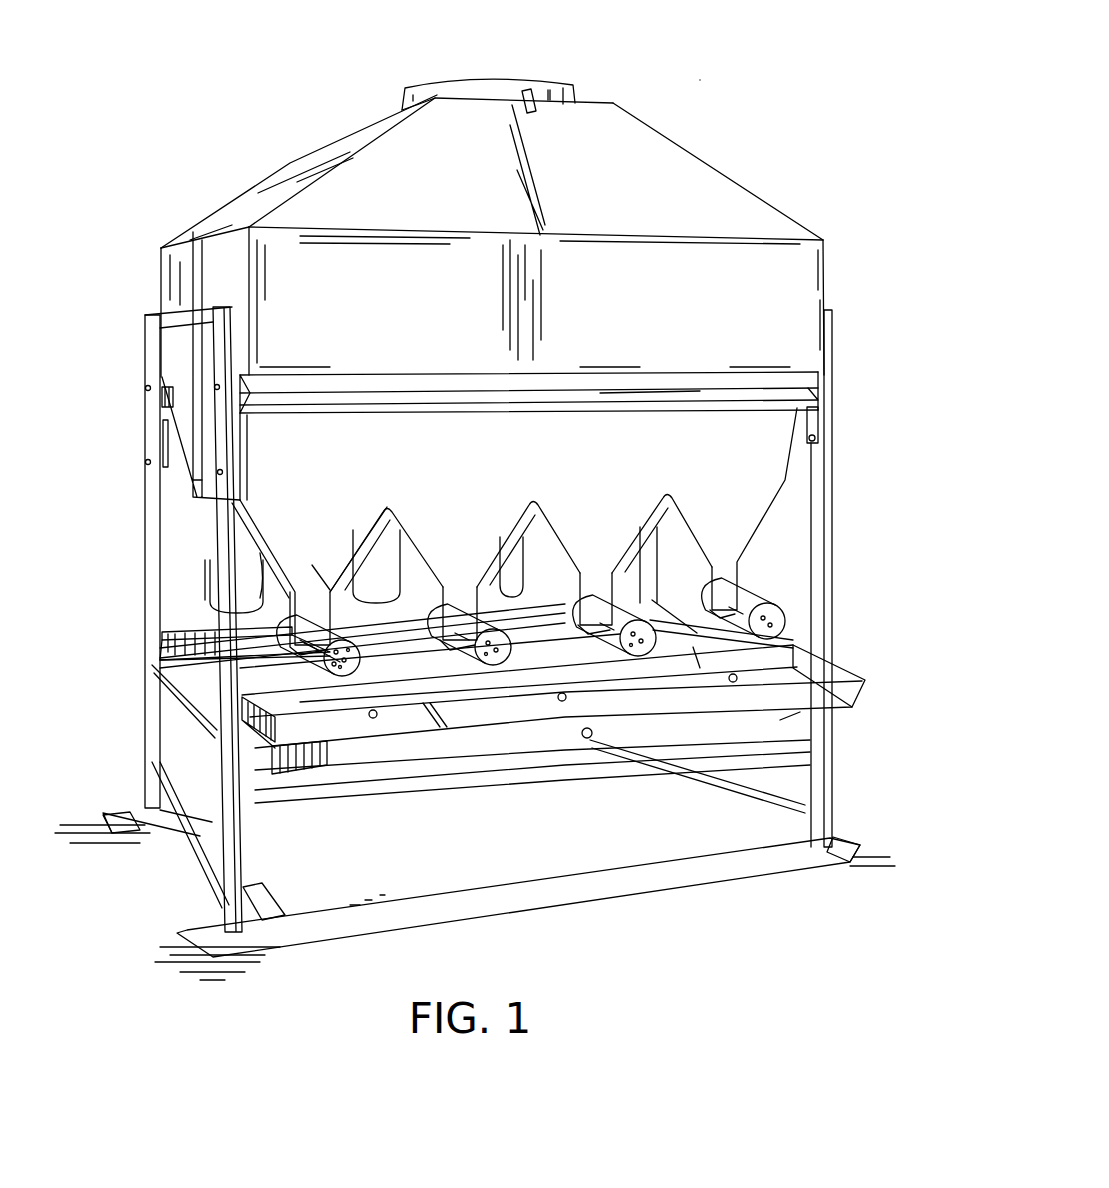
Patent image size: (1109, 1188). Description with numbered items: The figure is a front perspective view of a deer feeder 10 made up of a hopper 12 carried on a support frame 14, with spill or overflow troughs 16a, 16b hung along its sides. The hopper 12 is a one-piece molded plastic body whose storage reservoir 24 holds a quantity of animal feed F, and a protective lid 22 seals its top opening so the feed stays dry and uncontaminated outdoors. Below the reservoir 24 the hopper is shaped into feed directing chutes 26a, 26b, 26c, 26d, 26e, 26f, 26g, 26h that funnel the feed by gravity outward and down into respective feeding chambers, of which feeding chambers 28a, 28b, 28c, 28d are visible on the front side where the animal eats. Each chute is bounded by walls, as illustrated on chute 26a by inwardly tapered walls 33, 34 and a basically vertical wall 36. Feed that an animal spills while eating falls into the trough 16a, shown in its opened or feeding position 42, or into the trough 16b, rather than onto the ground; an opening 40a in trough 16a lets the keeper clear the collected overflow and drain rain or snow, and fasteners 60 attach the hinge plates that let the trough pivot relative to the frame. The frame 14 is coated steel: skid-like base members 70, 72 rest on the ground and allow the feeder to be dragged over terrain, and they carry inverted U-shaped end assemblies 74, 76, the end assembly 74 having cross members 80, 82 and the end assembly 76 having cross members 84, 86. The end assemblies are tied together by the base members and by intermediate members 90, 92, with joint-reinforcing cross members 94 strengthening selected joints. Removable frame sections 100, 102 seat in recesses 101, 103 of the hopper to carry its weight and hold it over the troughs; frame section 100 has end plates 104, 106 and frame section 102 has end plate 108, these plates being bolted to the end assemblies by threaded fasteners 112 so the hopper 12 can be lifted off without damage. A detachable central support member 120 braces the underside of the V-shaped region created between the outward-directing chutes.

The deer feeder 10 is at (727, 70).
The hopper 12 is at (529, 229).
The support frame 14 is at (481, 661).
The spill trough 16a is at (578, 736).
The spill trough 16b is at (177, 637).
The protective lid 22 is at (495, 88).
The storage reservoir 24 is at (802, 270).
The feed directing chute 26a is at (296, 539).
The feed directing chute 26b is at (462, 528).
The feed directing chute 26c is at (603, 517).
The feed directing chute 26d is at (742, 505).
The feed directing chute 26e is at (247, 543).
The feed directing chute 26f is at (380, 543).
The feed directing chute 26g is at (517, 545).
The feed directing chute 26h is at (648, 533).
The feeding chamber 28a is at (307, 667).
The feeding chamber 28b is at (463, 633).
The feeding chamber 28c is at (597, 620).
The feeding chamber 28d is at (733, 600).
The chute wall 33 is at (262, 553).
The chute wall 34 is at (350, 558).
The chute wall 36 is at (312, 565).
The opening 40a is at (590, 738).
The opened or feeding position 42 is at (787, 723).
The fasteners 60 is at (373, 718).
The base member 70 is at (525, 893).
The base member 72 is at (477, 787).
The inverted U-shaped end assembly 74 is at (145, 513).
The inverted U-shaped end assembly 76 is at (832, 502).
The cross member 80 is at (190, 700).
The cross member 82 is at (178, 848).
The cross member 84 is at (693, 647).
The cross member 86 is at (727, 787).
The intermediate member 90 is at (212, 822).
The intermediate member 92 is at (205, 670).
The joint-reinforcing cross member 94 is at (177, 793).
The removable frame section 100 is at (597, 395).
The recess 101 is at (710, 382).
The removable frame section 102 is at (167, 408).
The recess 103 is at (162, 378).
The end plate 104 is at (240, 452).
The end plate 106 is at (797, 420).
The end plate 108 is at (163, 438).
The fasteners 112 is at (217, 387).
The central support member 120 is at (197, 503).
The animal feed F is at (337, 675).